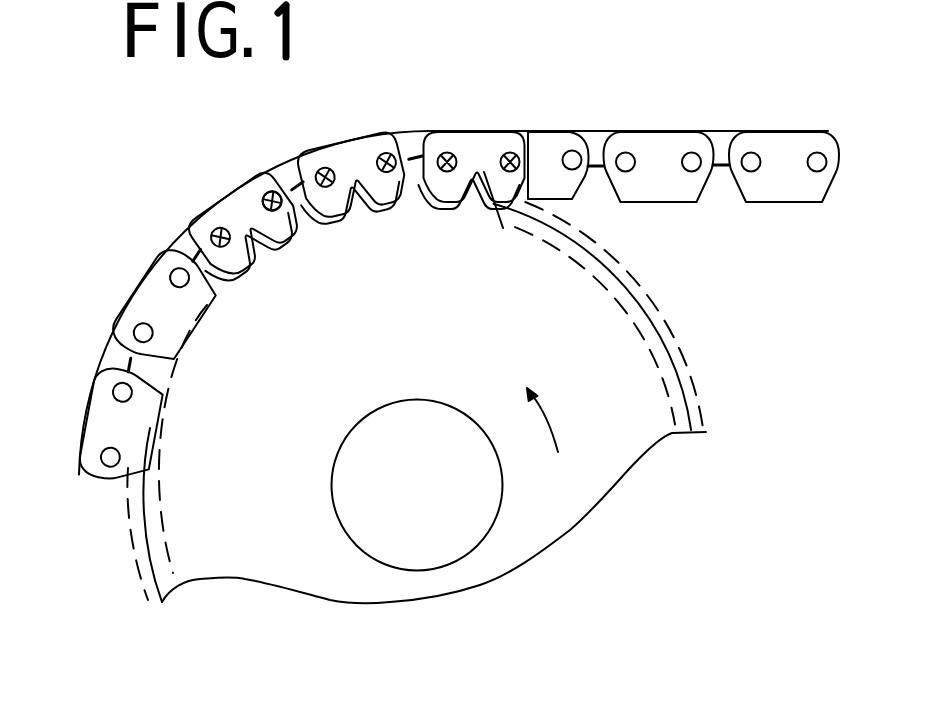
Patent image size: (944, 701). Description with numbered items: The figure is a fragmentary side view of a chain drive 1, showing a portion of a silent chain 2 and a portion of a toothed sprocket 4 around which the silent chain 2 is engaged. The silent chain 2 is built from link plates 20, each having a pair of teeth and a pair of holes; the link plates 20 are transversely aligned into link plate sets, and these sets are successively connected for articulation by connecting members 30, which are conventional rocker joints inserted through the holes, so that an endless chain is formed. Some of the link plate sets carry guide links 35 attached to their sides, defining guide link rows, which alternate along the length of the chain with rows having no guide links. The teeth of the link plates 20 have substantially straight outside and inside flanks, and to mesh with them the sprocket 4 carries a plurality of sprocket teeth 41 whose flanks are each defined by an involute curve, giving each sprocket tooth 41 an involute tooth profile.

The chain drive 1 is at (222, 156).
The silent chain 2 is at (587, 122).
The sprocket 4 is at (625, 290).
The link plate 20 is at (230, 213).
The connecting member 30 is at (275, 178).
The guide link 35 is at (675, 153).
The sprocket tooth 41 is at (466, 218).